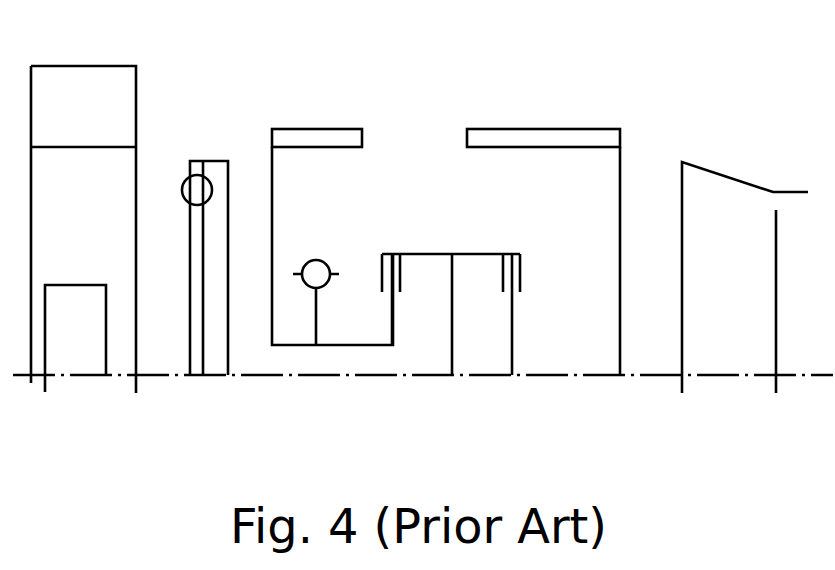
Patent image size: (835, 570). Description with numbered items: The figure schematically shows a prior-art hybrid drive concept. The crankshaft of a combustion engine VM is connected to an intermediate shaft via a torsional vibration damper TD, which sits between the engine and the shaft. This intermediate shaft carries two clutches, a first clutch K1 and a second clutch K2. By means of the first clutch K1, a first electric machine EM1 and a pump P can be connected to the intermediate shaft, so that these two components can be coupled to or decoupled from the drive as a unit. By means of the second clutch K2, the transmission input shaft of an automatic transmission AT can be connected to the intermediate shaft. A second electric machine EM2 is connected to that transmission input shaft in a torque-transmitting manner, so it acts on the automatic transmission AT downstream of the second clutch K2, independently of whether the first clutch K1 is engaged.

The combustion engine VM is at (83, 229).
The torsional vibration damper TD is at (193, 160).
The first electric machine EM1 is at (314, 137).
The second electric machine EM2 is at (544, 137).
The pump P is at (315, 260).
The first clutch K1 is at (392, 253).
The second clutch K2 is at (512, 253).
The automatic transmission AT is at (745, 277).